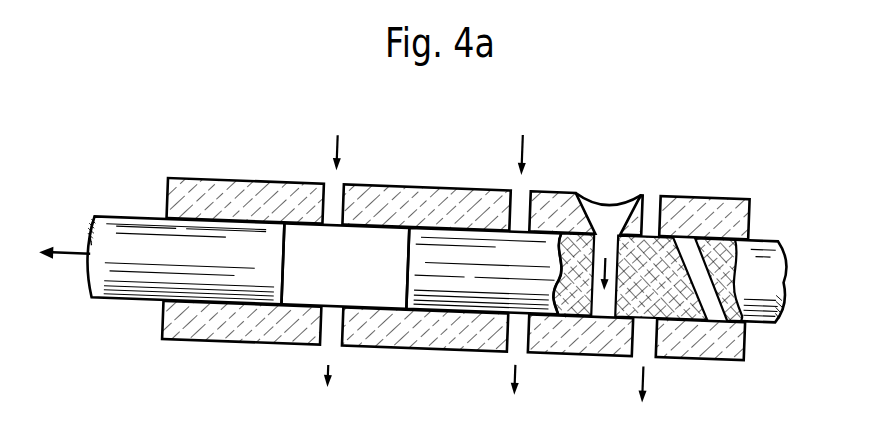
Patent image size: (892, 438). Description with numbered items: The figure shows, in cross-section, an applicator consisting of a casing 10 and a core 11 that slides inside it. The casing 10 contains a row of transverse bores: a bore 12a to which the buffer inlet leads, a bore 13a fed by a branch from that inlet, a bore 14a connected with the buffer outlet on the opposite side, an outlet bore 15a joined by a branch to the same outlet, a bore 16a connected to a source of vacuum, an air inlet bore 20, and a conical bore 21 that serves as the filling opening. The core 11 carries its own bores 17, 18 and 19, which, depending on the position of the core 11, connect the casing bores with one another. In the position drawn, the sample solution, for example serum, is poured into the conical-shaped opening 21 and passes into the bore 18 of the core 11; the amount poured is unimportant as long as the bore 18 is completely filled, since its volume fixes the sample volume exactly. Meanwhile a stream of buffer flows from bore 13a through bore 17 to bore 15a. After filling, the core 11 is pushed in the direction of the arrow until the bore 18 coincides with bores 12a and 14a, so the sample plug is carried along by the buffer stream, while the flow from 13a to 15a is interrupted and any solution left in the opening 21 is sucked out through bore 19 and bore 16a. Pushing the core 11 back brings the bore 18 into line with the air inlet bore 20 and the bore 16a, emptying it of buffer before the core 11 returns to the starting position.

The casing 10 is at (457, 242).
The core 11 is at (186, 231).
The bore 12a is at (502, 182).
The bore 13a is at (314, 177).
The bore 14a is at (497, 356).
The outlet bore 15a is at (306, 349).
The bore 16a is at (665, 363).
The bore 17 is at (345, 266).
The bore 18 is at (575, 274).
The bore 19 is at (746, 281).
The air inlet bore 20 is at (651, 188).
The conical bore 21 is at (608, 187).